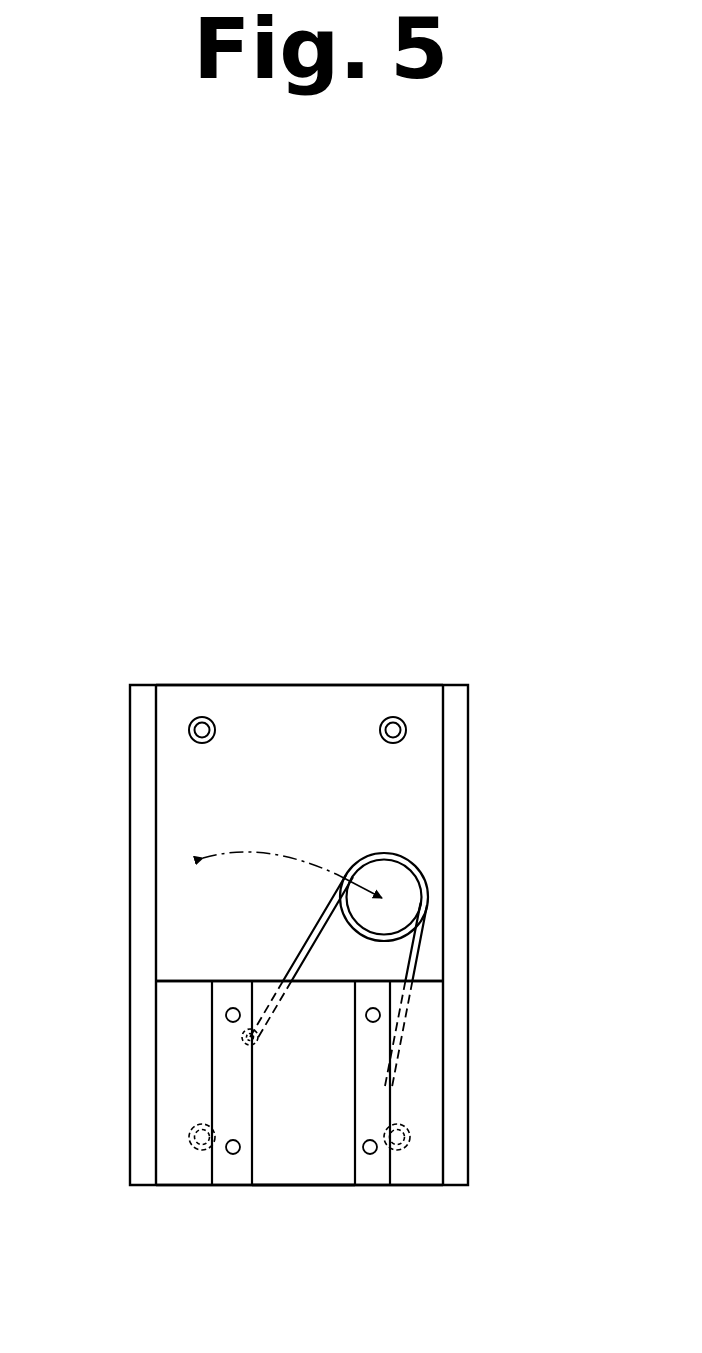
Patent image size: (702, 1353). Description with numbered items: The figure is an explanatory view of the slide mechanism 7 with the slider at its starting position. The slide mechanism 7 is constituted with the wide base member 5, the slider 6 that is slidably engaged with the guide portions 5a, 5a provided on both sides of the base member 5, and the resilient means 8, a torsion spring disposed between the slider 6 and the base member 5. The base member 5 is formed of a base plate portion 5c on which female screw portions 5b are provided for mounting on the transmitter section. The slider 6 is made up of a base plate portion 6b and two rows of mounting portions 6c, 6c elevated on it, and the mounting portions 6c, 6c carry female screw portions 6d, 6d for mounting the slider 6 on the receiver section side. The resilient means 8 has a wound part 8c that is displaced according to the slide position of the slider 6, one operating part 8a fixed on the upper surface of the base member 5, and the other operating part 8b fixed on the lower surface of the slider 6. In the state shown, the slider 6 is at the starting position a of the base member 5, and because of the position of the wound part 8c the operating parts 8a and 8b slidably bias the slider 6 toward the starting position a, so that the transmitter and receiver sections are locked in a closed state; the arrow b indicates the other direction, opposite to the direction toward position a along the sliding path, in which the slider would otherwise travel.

The base member 5 is at (302, 786).
The guide portions 5a is at (130, 1062).
The female screw portions 5b is at (208, 718).
The base plate portion 5c is at (338, 712).
The slider 6 is at (310, 1081).
The base plate portion 6b is at (314, 1163).
The mounting portions 6c is at (222, 1093).
The female screw portions 6d is at (225, 1015).
The slide mechanism 7 is at (478, 746).
The resilient means 8 is at (424, 862).
The operating part 8a is at (308, 935).
The operating part 8b is at (423, 959).
The wound part 8c is at (398, 853).
The starting position a is at (253, 1192).
The direction b is at (297, 682).